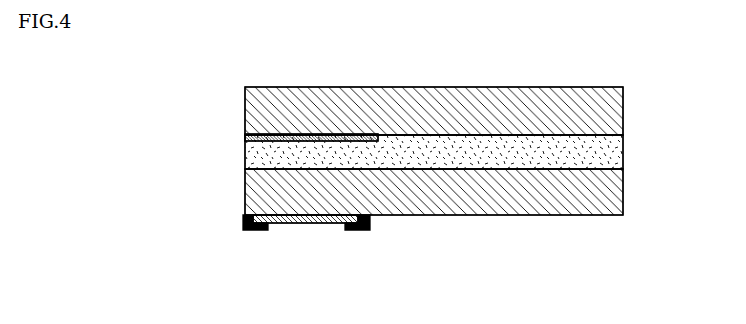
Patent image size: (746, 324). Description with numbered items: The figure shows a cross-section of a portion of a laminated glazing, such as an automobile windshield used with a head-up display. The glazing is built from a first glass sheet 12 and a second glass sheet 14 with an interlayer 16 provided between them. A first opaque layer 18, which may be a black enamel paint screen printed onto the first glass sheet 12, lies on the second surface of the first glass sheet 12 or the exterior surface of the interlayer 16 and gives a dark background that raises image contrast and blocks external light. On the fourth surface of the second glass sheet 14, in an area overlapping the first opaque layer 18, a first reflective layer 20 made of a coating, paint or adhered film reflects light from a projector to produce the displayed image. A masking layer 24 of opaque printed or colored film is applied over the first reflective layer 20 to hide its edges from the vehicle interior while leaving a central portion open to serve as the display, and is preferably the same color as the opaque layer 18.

The first glass sheet 12 is at (617, 111).
The second glass sheet 14 is at (617, 191).
The interlayer 16 is at (619, 150).
The first opaque layer 18 is at (307, 134).
The first reflective layer 20 is at (310, 223).
The masking layer 24 is at (246, 221).